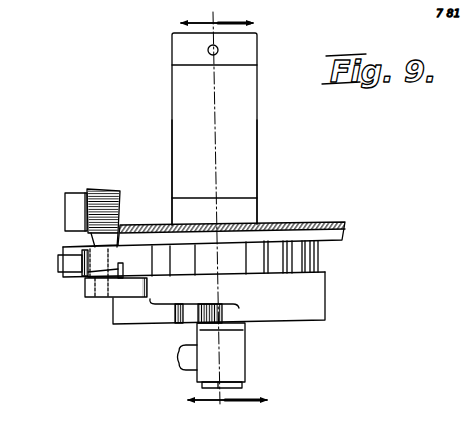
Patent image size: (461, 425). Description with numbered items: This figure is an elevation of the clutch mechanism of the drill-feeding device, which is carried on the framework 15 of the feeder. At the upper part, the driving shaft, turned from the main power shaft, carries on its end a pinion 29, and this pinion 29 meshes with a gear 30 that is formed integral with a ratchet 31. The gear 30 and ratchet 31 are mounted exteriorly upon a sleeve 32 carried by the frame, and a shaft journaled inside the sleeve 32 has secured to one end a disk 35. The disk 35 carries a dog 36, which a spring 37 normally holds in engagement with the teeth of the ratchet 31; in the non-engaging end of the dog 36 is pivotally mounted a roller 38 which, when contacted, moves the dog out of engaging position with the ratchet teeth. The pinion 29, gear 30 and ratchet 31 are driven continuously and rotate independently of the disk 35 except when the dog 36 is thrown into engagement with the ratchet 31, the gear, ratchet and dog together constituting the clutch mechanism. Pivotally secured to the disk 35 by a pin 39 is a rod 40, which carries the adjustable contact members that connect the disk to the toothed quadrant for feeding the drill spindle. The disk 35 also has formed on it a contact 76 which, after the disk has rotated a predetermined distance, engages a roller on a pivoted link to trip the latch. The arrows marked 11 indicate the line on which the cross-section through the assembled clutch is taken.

The section line 11— 11 is at (212, 212).
The framework 15 is at (172, 113).
The pinion 29 is at (100, 190).
The gear 30 is at (312, 226).
The ratchet 31 is at (312, 258).
The sleeve 32 is at (254, 156).
The disk 35 is at (318, 299).
The dog 36 is at (138, 243).
The spring 37 is at (87, 276).
The roller 38 is at (58, 262).
The pin 39 is at (243, 385).
The rod 40 is at (180, 367).
The contact 76 is at (187, 320).